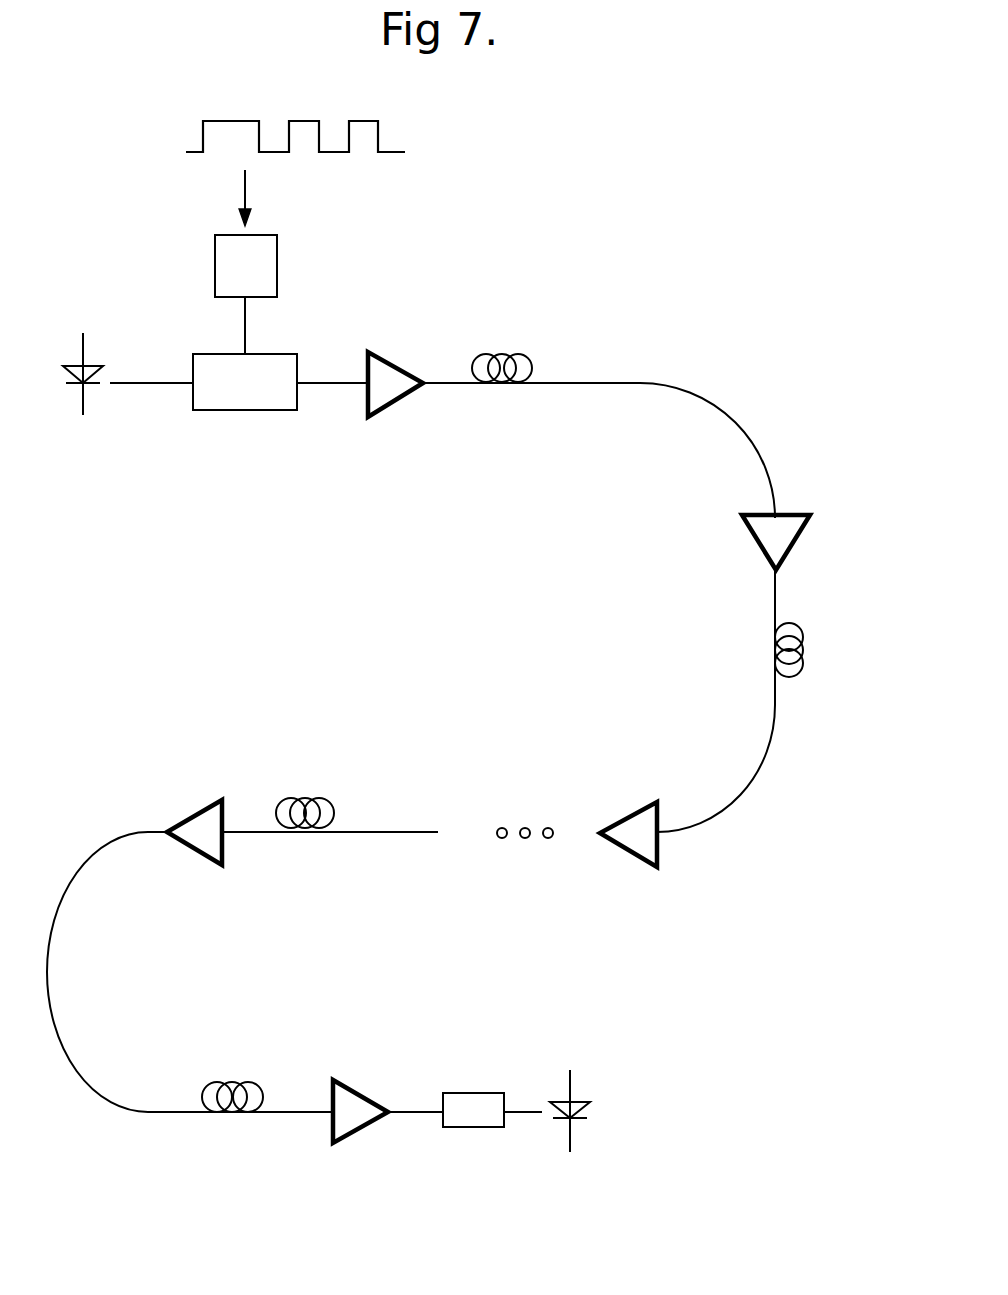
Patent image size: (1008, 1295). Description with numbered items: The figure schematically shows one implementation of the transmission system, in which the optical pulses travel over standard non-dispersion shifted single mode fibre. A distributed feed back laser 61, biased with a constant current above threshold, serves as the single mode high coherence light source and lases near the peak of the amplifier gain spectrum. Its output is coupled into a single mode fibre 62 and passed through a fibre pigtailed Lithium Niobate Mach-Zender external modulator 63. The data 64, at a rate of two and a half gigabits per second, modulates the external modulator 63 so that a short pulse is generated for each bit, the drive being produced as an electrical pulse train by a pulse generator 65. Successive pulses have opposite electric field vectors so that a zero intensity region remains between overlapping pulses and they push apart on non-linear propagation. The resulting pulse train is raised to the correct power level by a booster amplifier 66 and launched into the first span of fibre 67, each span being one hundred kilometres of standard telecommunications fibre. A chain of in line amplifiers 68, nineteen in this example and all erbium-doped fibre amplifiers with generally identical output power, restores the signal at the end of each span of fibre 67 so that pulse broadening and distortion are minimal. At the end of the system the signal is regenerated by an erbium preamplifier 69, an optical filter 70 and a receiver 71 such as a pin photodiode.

The distributed feed back laser 61 is at (76, 440).
The single mode fibre 62 is at (159, 400).
The external modulator 63 is at (245, 382).
The data 64 is at (319, 145).
The pulse generator 65 is at (246, 266).
The booster amplifier 66 is at (395, 398).
The span of fibre 67 is at (534, 744).
The in line amplifier 68 is at (496, 712).
The erbium preamplifier 69 is at (360, 1126).
The optical filter 70 is at (473, 1132).
The receiver 71 is at (571, 1105).